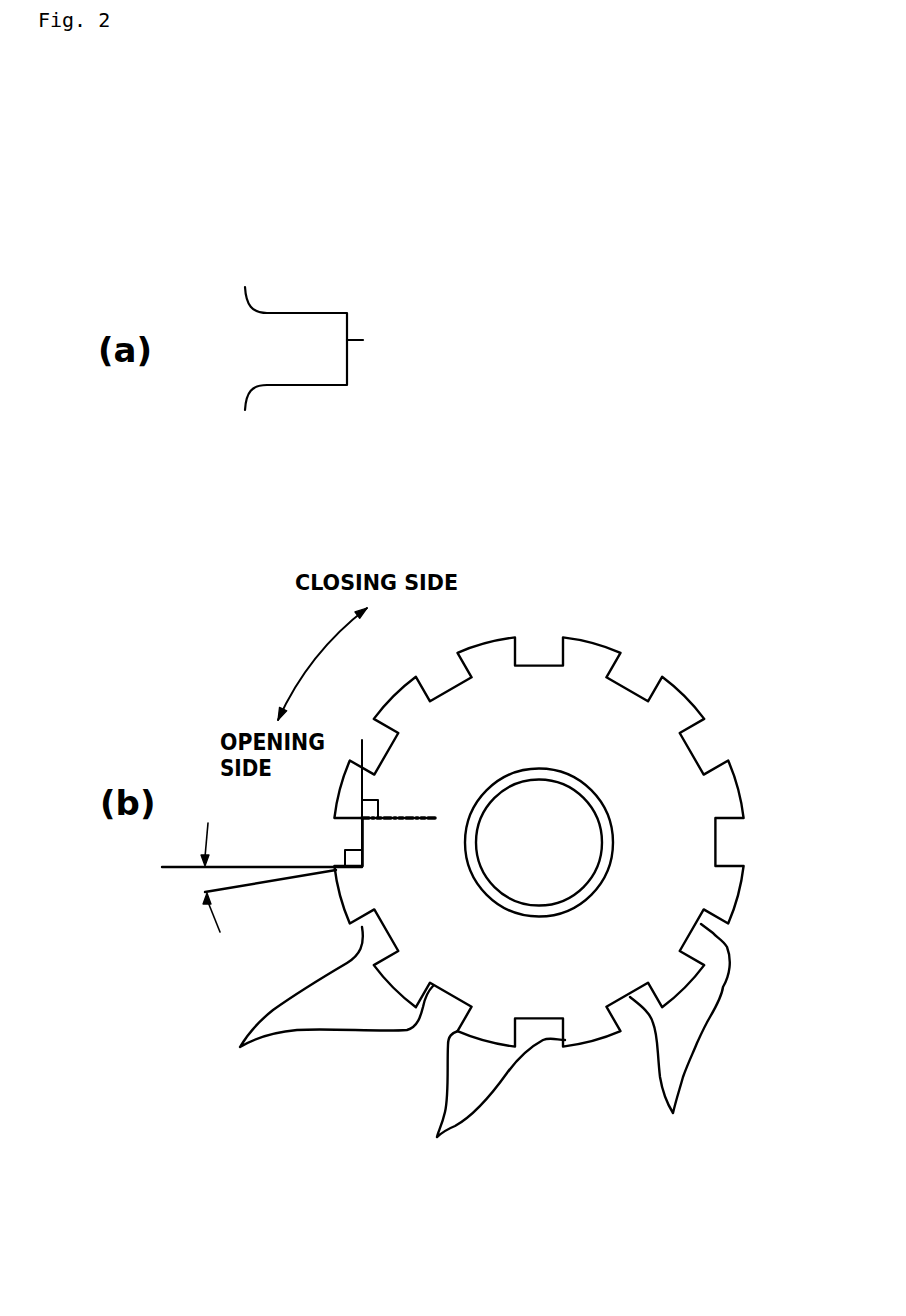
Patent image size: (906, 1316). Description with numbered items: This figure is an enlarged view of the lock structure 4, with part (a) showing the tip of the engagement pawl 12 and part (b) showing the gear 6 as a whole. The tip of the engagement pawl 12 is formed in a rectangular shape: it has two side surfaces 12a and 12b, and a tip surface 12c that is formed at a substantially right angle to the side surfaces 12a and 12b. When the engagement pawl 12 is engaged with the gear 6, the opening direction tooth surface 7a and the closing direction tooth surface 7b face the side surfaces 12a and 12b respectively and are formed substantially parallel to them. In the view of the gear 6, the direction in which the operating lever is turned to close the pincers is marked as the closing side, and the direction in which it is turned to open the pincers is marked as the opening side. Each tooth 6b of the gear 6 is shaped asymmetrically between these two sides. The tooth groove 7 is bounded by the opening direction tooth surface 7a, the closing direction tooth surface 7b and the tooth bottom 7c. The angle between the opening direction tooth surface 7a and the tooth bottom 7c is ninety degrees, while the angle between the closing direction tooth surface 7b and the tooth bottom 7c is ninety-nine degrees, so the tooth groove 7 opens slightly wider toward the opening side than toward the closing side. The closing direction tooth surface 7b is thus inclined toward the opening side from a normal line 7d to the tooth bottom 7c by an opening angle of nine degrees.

The engagement pawl 12 is at (373, 287).
The side surface 12a is at (312, 313).
The side surface 12b is at (305, 385).
The tip surface 12c is at (363, 340).
The lock structure 4 is at (622, 487).
The gear 6 is at (635, 757).
The tooth 6b is at (598, 631).
The tooth groove 7 is at (532, 628).
The opening direction tooth surface 7a is at (315, 1010).
The closing direction tooth surface 7b is at (485, 1108).
The tooth bottom 7c is at (680, 1043).
The normal line 7d is at (248, 867).